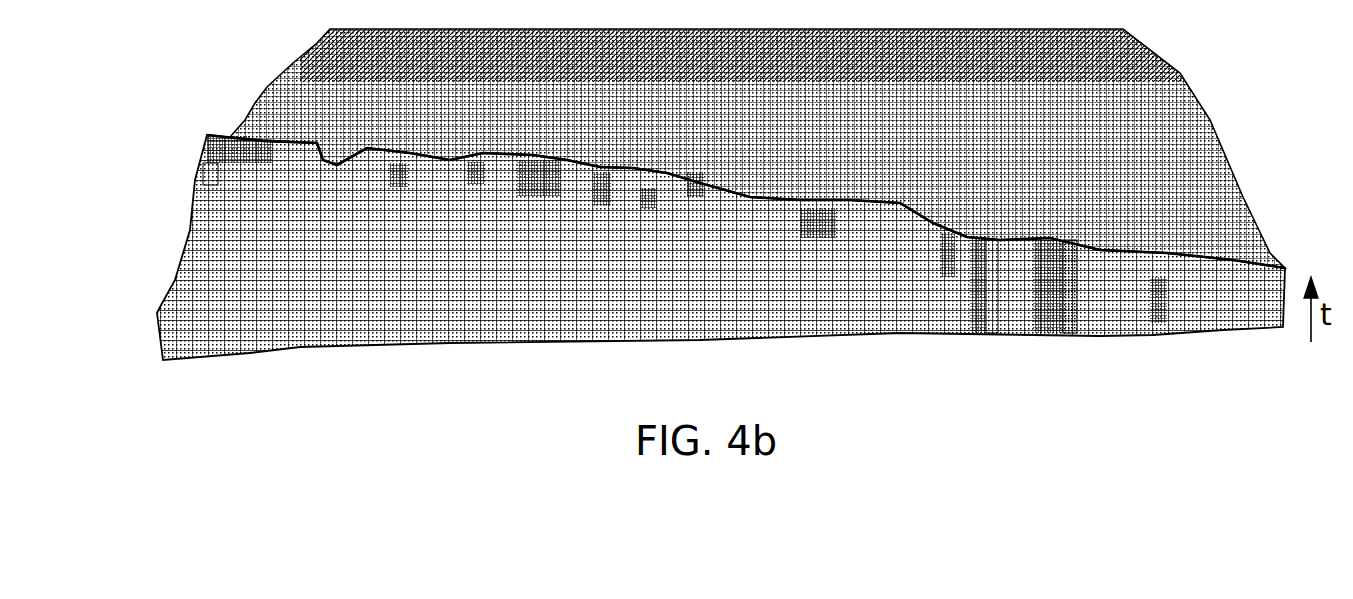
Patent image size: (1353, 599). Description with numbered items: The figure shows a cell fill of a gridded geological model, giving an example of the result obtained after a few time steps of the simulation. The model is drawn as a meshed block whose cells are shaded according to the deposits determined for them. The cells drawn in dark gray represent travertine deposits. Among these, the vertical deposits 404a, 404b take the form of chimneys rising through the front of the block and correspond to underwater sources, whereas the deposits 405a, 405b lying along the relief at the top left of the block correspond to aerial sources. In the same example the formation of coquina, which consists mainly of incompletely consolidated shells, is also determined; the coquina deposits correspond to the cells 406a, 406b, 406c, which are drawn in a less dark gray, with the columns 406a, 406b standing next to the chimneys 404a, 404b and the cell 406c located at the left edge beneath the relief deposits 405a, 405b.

The travertine deposit cell along the relief 405a is at (203, 150).
The travertine deposit cell along the relief 405b is at (263, 145).
The coquina deposit cell 406c is at (203, 178).
The coquina deposit cell 406a is at (968, 334).
The vertical travertine deposit (chimney) 404a is at (982, 334).
The coquina deposit cell 406b is at (1042, 334).
The vertical travertine deposit (chimney) 404b is at (1070, 334).